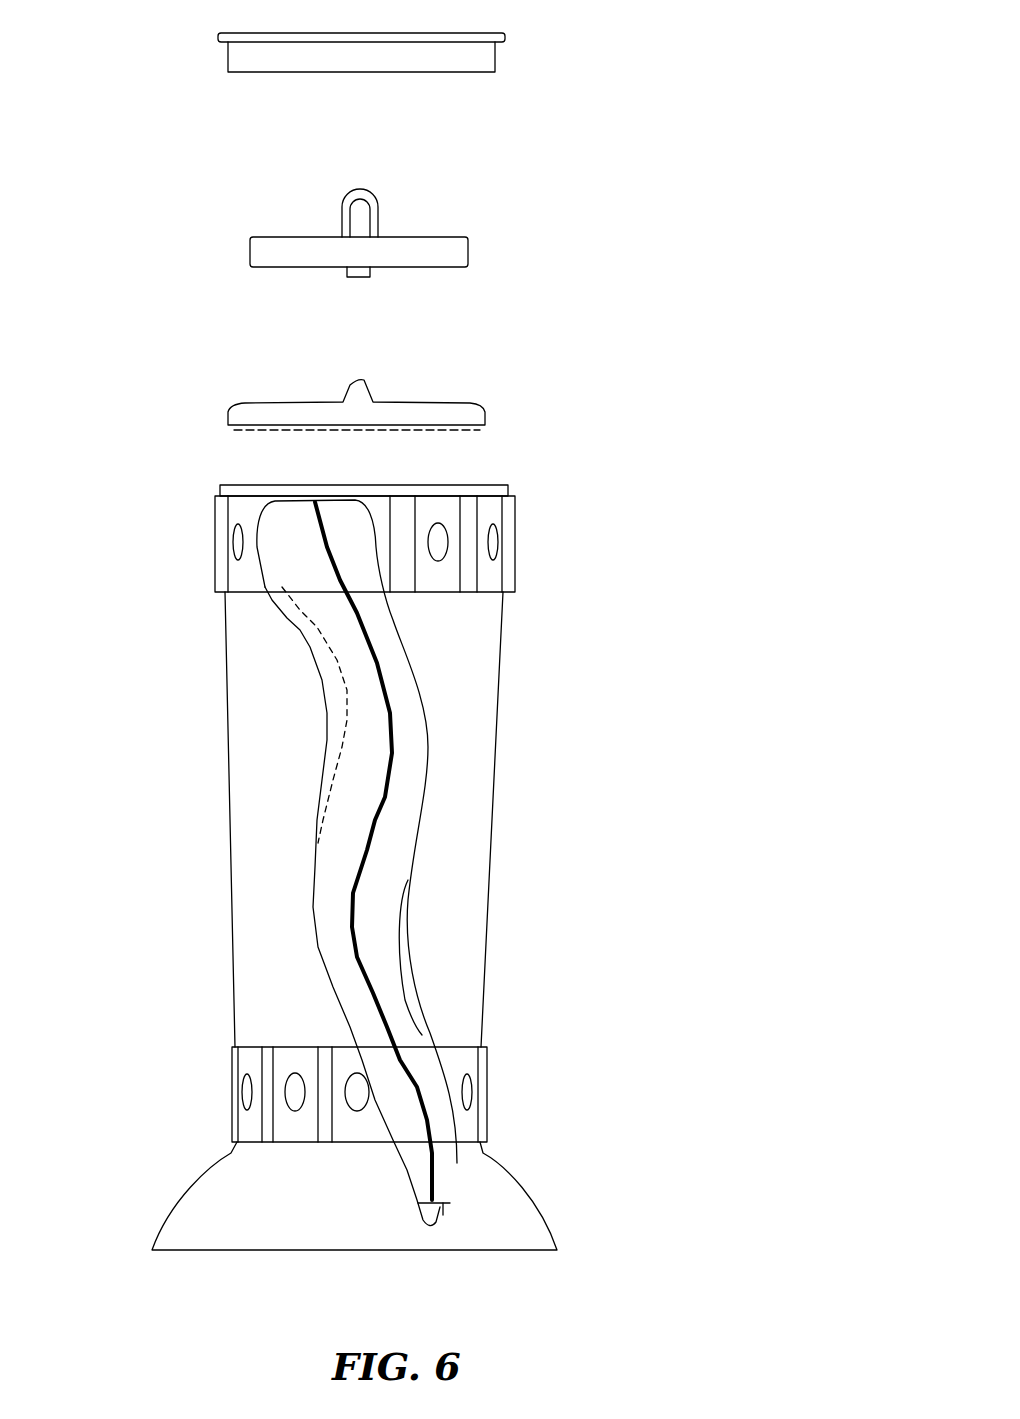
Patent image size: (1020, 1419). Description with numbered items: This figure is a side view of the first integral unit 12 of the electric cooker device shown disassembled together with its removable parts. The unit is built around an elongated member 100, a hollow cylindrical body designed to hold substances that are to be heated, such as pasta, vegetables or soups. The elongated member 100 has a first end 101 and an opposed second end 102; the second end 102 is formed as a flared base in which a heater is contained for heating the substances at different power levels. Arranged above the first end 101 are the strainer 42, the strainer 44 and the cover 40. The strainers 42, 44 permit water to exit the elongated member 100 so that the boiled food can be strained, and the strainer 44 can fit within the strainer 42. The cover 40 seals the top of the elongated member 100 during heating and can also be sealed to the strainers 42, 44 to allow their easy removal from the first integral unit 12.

The first integral unit 12 is at (238, 858).
The cover 40 is at (478, 410).
The strainer 42 is at (490, 52).
The strainer 44 is at (452, 252).
The elongated member 100 is at (205, 784).
The first end 101 is at (227, 531).
The second end 102 is at (242, 1065).